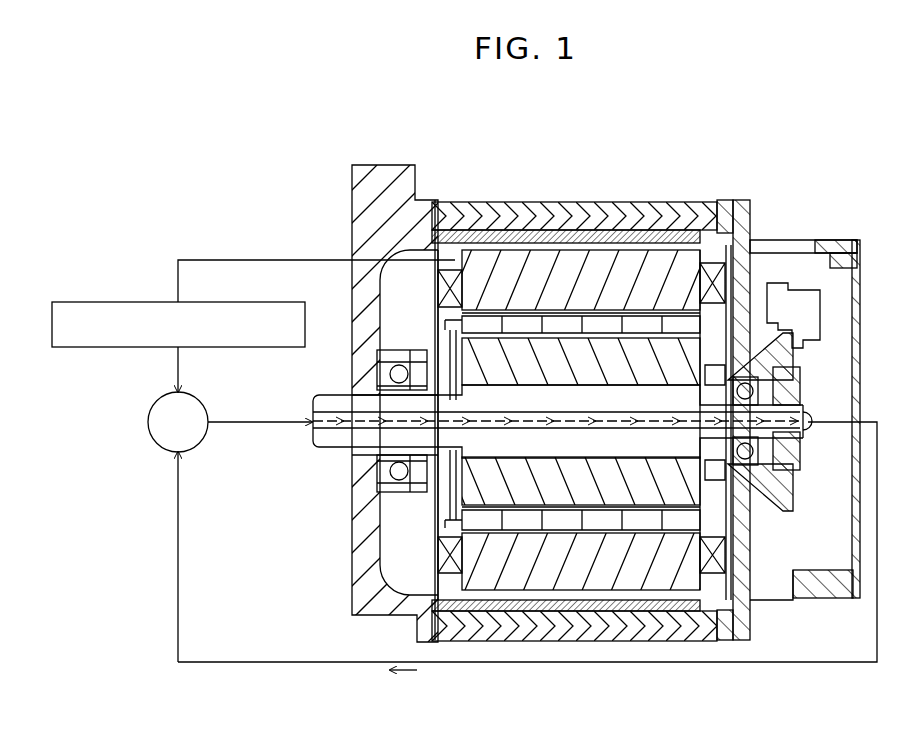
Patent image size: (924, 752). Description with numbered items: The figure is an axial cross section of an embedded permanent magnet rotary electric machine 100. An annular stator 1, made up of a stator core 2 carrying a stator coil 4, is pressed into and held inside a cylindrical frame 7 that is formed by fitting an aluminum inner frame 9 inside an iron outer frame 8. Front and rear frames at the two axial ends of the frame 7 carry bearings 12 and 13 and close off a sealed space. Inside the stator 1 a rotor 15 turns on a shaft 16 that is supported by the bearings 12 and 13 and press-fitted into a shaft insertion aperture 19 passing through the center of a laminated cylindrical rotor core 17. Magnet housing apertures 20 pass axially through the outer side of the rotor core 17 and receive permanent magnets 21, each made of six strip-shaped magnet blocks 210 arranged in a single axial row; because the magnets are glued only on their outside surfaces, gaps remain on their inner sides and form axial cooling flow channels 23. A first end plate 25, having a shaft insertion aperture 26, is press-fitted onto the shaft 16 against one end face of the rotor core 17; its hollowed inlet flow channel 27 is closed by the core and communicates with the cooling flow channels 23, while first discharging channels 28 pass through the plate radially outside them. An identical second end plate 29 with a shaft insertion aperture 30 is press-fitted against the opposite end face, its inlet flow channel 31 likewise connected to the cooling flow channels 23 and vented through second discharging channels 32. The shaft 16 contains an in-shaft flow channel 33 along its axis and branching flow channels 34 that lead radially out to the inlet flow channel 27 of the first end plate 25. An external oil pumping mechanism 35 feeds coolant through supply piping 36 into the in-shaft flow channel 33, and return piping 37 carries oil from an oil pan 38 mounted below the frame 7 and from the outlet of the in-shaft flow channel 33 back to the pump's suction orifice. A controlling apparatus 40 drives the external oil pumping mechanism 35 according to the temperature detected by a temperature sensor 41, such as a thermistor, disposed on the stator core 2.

The embedded permanent magnet rotary electric machine 100 is at (287, 98).
The stator 1 is at (725, 147).
The stator core 2 is at (688, 262).
The stator coil 4 is at (714, 280).
The frame 7 is at (677, 147).
The outer frame 8 is at (648, 216).
The inner frame 9 is at (672, 232).
The bearing 12 is at (378, 362).
The bearing 13 is at (773, 373).
The rotor 15 is at (584, 310).
The shaft 16 is at (313, 452).
The rotor core 17 is at (597, 315).
The shaft insertion aperture 19 is at (633, 385).
The magnet housing apertures 20 is at (540, 327).
The permanent magnets 21 is at (518, 323).
The magnet blocks 210 is at (484, 323).
The cooling flow channels 23 is at (562, 337).
The first end plate 25 is at (447, 352).
The shaft insertion aperture 26 is at (452, 460).
The inlet flow channel 27 is at (452, 510).
The first discharging channels 28 is at (445, 326).
The second end plate 29 is at (741, 362).
The shaft insertion aperture 30 is at (728, 474).
The inlet flow channel 31 is at (702, 483).
The second discharging channels 32 is at (740, 278).
The in-shaft flow channel 33 is at (351, 402).
The branching flow channels 34 is at (355, 456).
The external oil pumping mechanism 35 is at (156, 398).
The supply piping 36 is at (302, 413).
The return piping 37 is at (312, 660).
The oil pan 38 is at (593, 648).
The controlling apparatus 40 is at (150, 302).
The temperature sensor 41 is at (456, 248).